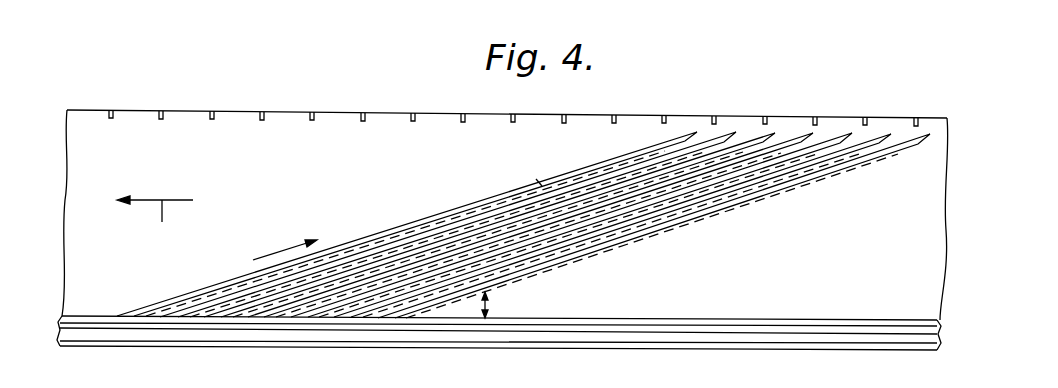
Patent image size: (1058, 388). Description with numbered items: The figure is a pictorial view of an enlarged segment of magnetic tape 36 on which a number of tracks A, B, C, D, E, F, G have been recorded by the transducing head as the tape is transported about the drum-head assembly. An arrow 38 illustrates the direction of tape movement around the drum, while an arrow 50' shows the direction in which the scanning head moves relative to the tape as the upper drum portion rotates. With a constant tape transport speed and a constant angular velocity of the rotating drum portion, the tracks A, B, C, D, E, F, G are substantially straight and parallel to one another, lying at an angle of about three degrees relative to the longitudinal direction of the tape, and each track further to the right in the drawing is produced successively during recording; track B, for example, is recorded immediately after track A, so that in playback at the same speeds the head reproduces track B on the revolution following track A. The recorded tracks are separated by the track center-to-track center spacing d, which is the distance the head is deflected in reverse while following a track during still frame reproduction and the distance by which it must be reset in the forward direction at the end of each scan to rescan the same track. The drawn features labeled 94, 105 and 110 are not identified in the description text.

The magnetic tape 36 is at (609, 117).
The edge marks 94 is at (380, 112).
The strips 105 is at (523, 253).
The gap lines 110 is at (570, 245).
The arrow 38 is at (155, 222).
The arrow 50' is at (285, 235).
The track A is at (380, 233).
The track B is at (412, 240).
The track C is at (443, 238).
The track D is at (483, 238).
The track E is at (333, 300).
The track F is at (723, 187).
The track G is at (788, 178).
The track center-to-track center spacing d is at (538, 183).